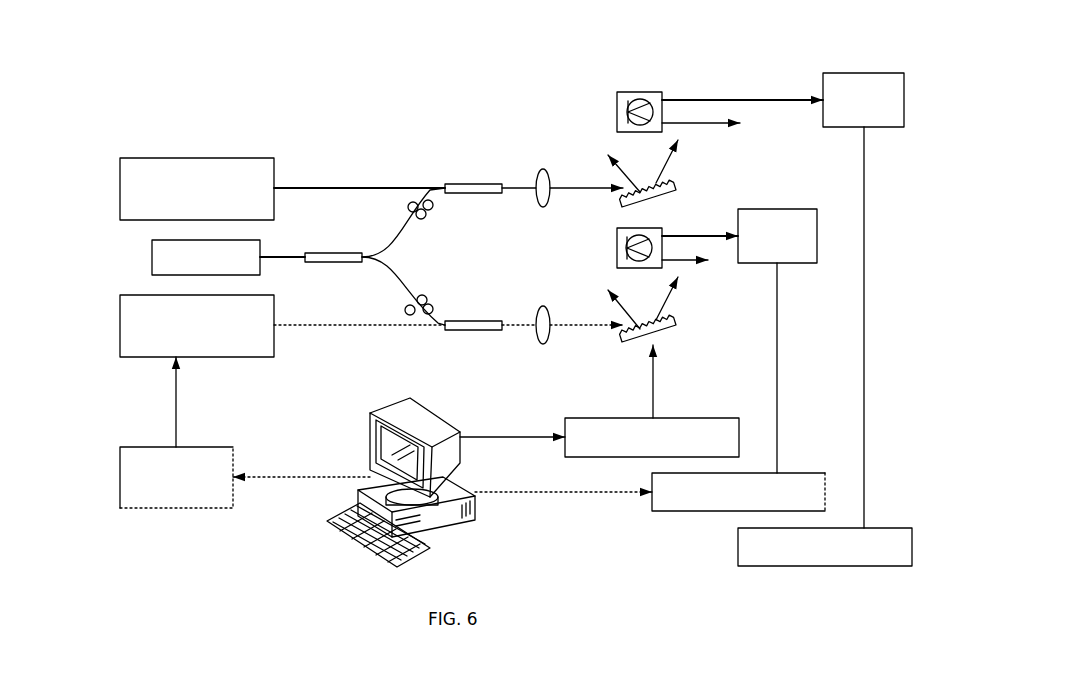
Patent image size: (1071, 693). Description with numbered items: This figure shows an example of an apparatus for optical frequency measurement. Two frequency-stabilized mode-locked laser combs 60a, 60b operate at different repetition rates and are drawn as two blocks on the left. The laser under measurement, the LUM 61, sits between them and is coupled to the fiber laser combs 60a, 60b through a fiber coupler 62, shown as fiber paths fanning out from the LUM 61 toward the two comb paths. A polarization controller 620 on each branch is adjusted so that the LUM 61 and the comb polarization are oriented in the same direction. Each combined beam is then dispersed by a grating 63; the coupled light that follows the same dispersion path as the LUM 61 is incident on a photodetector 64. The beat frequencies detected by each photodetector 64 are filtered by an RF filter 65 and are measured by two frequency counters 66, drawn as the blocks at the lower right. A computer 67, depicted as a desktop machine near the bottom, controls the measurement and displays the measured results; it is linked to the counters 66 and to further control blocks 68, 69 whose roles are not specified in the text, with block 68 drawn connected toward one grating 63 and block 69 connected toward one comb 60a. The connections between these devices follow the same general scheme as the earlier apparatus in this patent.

The frequency-stabilized mode-locked laser comb 60a is at (118, 327).
The frequency-stabilized mode-locked laser comb 60b is at (118, 190).
The LUM 61 is at (150, 256).
The fiber coupler 62 is at (382, 258).
The polarization controller 620 is at (406, 208).
The grating 63 is at (680, 183).
The photodetector 64 is at (616, 106).
The RF filter 65 is at (822, 82).
The frequency counter 66 is at (738, 546).
The computer 67 is at (375, 415).
The grating controller 68 is at (582, 418).
The light source controller 69 is at (118, 478).